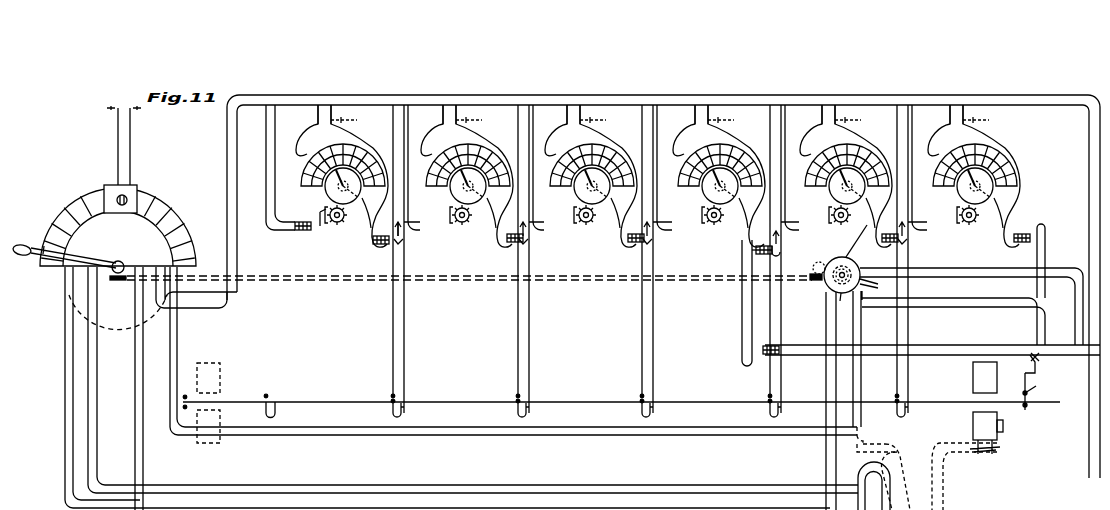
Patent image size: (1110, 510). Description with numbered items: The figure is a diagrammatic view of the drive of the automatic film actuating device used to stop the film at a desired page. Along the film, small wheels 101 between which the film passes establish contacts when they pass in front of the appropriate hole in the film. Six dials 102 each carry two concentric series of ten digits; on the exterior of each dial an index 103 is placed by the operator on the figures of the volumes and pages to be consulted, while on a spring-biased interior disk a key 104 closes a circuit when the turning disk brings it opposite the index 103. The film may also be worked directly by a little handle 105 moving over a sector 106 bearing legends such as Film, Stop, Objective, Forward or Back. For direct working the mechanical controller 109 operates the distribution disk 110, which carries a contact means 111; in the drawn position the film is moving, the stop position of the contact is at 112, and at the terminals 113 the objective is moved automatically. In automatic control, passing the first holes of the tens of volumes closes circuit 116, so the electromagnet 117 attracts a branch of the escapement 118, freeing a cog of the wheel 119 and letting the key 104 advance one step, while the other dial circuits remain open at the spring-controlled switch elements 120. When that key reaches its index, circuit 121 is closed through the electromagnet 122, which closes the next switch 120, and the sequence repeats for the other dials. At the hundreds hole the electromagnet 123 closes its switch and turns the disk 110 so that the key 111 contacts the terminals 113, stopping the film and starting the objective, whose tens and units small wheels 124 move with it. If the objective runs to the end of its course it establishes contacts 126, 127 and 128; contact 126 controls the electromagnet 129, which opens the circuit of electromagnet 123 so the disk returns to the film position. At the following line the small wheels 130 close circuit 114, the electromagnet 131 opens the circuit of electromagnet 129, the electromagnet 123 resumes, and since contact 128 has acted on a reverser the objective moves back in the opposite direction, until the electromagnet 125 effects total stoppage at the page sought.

The small wheels 101 is at (270, 392).
The dials 102 is at (305, 170).
The index 103 is at (582, 142).
The key 104 is at (340, 186).
The handle 105 is at (25, 266).
The sector 106 is at (78, 212).
The mechanical controller 109 is at (578, 280).
The distribution disk 110 is at (866, 232).
The contact means 111 is at (830, 293).
The stop position contact 112 is at (842, 295).
The terminals for automatic objective movement 113 is at (881, 288).
The circuit 114 is at (957, 272).
The circuit of the tens of volumes 116 is at (272, 330).
The electromagnet 117 is at (302, 231).
The escapement 118 is at (322, 230).
The wheel 119 is at (340, 225).
The spring-controlled switch elements 120 is at (402, 240).
The circuit 121 is at (355, 124).
The electromagnet 122 is at (381, 245).
The electromagnet 123 is at (756, 250).
The small wheels 124 is at (770, 395).
The electromagnet 125 is at (1034, 238).
The contact 126 is at (991, 361).
The contact 127 is at (1008, 432).
The contact 128 is at (998, 451).
The electromagnet 129 is at (752, 356).
The small wheels 130 is at (1028, 397).
The electromagnet 131 is at (1040, 358).